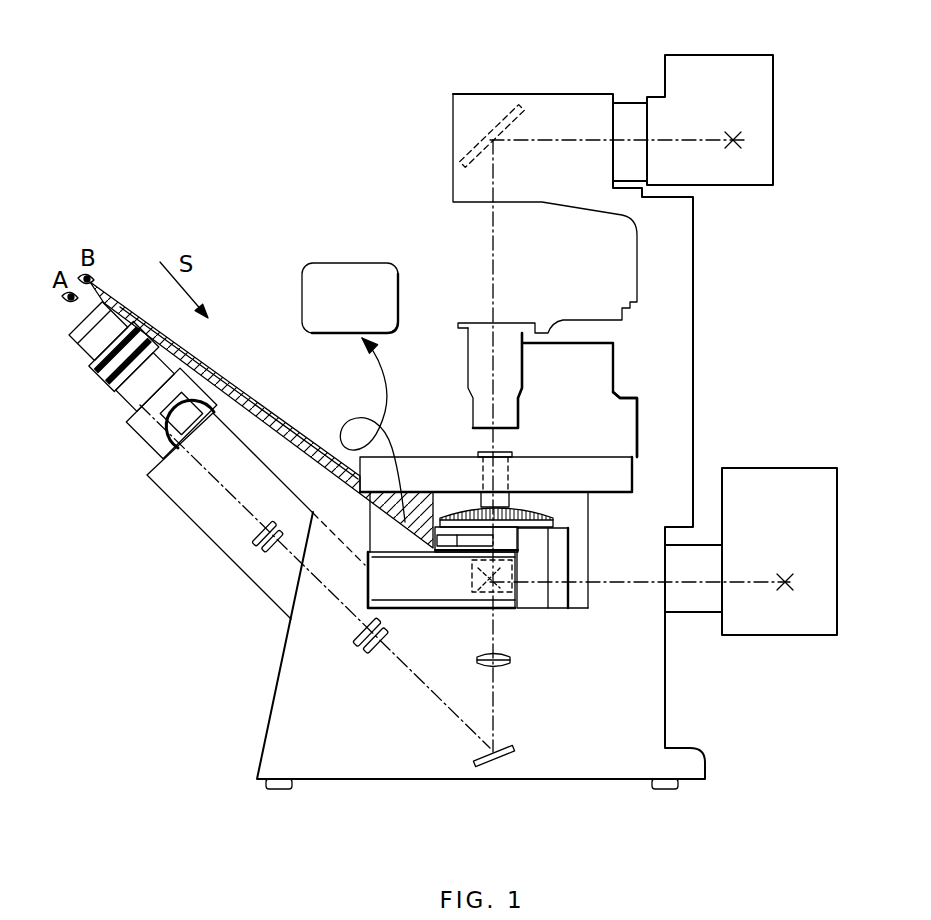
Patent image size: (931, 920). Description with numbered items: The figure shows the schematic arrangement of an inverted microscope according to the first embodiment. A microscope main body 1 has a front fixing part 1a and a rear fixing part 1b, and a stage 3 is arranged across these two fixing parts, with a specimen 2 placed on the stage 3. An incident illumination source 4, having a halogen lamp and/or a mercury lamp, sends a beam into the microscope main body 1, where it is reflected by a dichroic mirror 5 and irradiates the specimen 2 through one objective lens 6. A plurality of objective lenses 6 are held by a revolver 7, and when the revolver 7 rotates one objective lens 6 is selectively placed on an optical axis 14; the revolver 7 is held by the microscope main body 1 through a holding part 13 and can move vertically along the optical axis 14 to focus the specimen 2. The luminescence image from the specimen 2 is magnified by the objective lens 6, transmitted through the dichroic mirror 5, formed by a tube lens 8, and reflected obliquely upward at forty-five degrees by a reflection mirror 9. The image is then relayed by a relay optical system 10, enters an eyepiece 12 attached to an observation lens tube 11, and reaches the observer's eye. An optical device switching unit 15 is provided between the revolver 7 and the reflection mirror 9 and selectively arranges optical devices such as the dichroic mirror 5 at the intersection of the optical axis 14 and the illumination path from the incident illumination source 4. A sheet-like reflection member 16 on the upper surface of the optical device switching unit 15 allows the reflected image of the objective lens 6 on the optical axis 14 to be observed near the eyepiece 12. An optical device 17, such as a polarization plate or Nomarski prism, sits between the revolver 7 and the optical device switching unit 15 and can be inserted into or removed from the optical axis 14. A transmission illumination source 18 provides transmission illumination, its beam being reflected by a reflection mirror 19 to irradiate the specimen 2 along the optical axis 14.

The microscope main body 1 is at (668, 378).
The front fixing part 1a is at (318, 508).
The rear fixing part 1b is at (633, 478).
The specimen 2 is at (477, 452).
The stage 3 is at (552, 468).
The incident illumination source 4 is at (793, 482).
The dichroic mirror 5 is at (490, 580).
The objective lens 6 is at (515, 478).
The revolver 7 is at (548, 512).
The tube lens 8 is at (512, 660).
The reflection mirror 9 is at (503, 743).
The relay optical system 10 is at (253, 555).
The observation lens tube 11 is at (180, 488).
The eyepiece 12 is at (92, 357).
The holding part 13 is at (560, 556).
The optical axis 14 is at (497, 278).
The optical device switching unit 15 is at (383, 587).
The sheet-like reflection member 16 is at (352, 275).
The optical device 17 is at (447, 538).
The transmission illumination source 18 is at (697, 75).
The reflection mirror 19 is at (500, 112).